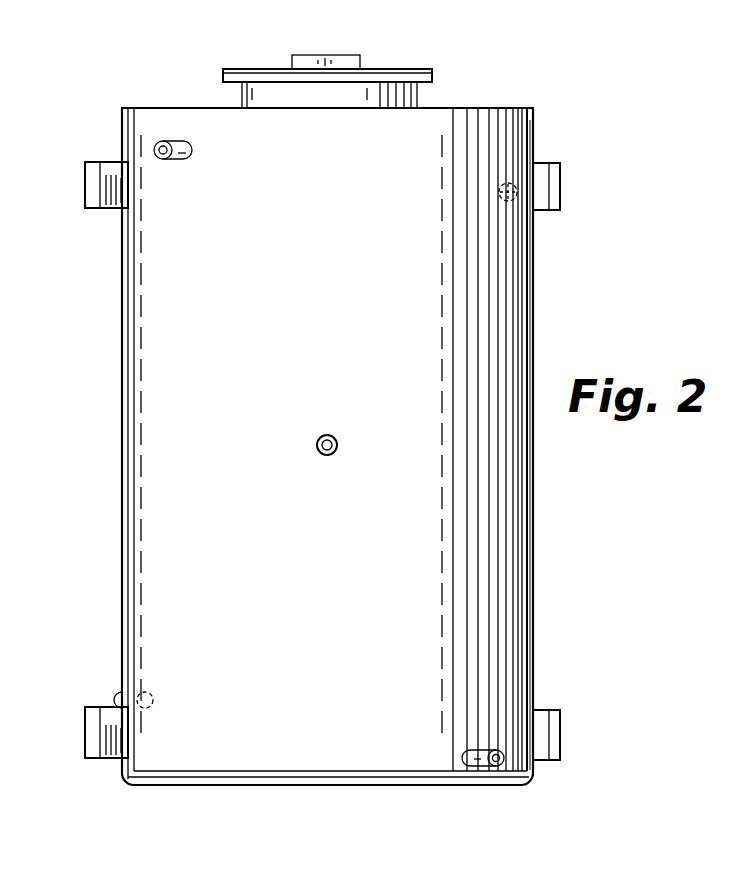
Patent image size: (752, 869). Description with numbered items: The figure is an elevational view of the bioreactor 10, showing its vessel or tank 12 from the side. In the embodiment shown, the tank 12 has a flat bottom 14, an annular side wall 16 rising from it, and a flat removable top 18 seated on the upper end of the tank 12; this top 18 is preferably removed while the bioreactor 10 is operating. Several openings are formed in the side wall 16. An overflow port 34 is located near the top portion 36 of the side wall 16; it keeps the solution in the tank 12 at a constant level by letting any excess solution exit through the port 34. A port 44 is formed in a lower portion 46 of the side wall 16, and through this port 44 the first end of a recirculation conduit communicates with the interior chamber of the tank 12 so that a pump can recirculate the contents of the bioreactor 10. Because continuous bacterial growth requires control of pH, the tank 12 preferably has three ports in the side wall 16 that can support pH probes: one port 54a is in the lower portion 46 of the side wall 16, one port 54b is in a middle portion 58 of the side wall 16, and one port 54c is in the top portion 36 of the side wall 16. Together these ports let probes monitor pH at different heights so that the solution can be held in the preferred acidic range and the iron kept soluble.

The bioreactor 10 is at (497, 271).
The tank 12 is at (140, 283).
The flat bottom 14 is at (280, 785).
The annular side wall 16 is at (533, 566).
The flat removable top 18 is at (384, 80).
The overflow port 34 is at (165, 135).
The top portion 36 is at (530, 116).
The port 44 is at (487, 770).
The lower portion 46 is at (533, 658).
The port 54a is at (118, 700).
The port 54b is at (320, 457).
The port 54c is at (548, 187).
The middle portion 58 is at (124, 440).